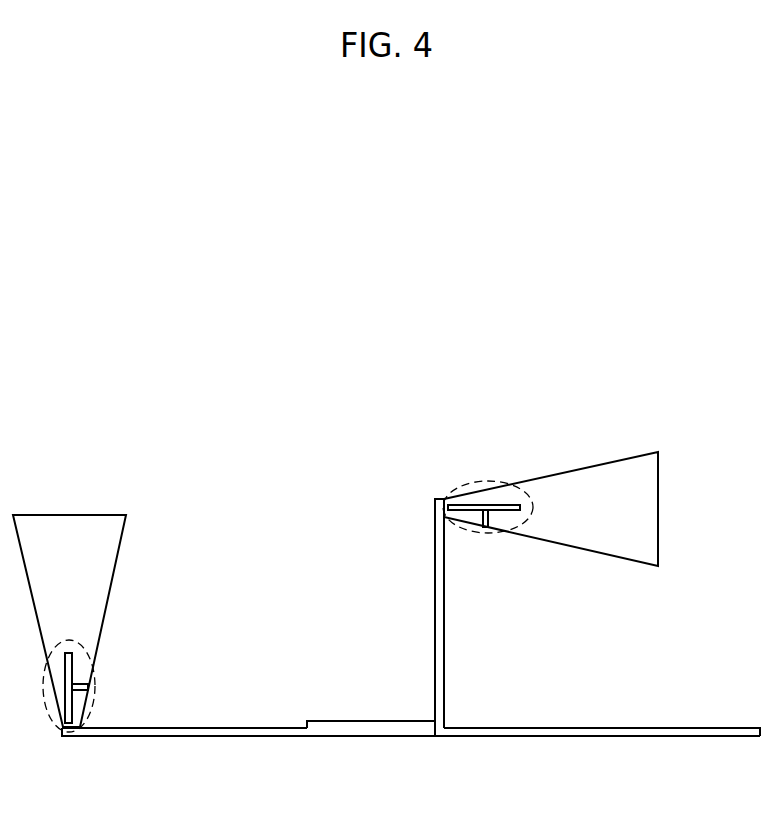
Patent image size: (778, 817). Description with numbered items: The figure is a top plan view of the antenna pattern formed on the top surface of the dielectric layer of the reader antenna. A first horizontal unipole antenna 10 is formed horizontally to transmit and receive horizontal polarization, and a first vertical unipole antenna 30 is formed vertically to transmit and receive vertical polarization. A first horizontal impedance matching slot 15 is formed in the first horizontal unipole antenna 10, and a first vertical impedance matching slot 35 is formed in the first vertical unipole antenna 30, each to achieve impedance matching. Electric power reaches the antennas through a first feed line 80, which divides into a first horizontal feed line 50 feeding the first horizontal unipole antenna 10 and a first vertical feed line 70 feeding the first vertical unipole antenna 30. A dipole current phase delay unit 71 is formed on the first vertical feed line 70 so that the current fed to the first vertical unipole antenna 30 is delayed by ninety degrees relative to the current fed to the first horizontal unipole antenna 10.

The first horizontal unipole antenna 10 is at (571, 472).
The first horizontal impedance matching slot 15 is at (478, 481).
The first vertical unipole antenna 30 is at (117, 557).
The first vertical impedance matching slot 35 is at (95, 688).
The first horizontal feed line 50 is at (444, 603).
The first vertical feed line 70 is at (230, 727).
The dipole current phase delay unit 71 is at (365, 721).
The first feed line 80 is at (655, 728).